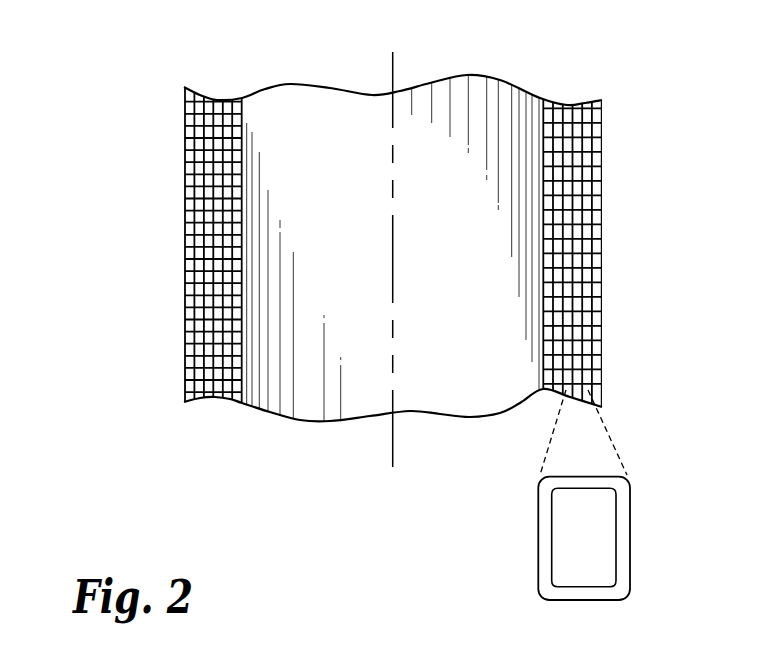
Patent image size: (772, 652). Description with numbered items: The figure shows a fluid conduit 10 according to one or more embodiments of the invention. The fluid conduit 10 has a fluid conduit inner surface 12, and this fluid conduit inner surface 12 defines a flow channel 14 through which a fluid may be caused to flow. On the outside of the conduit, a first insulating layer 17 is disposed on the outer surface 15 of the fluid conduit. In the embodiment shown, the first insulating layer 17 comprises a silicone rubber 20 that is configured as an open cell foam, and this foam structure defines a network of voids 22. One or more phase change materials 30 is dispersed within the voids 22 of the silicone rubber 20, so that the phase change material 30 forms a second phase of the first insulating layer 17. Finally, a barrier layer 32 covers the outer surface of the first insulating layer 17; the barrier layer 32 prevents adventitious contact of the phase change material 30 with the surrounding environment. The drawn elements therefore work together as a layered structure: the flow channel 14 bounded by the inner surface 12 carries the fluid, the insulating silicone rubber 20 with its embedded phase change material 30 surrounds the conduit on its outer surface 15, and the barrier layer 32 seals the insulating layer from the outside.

The fluid conduit 10 is at (120, 76).
The fluid conduit inner surface 12 is at (242, 121).
The flow channel 14 is at (470, 195).
The outer surface 15 is at (235, 98).
The first insulating layer 17 is at (603, 91).
The silicone rubber 20 is at (602, 329).
The network of voids 22 is at (562, 567).
The phase change material 30 is at (192, 368).
The barrier layer 32 is at (602, 259).